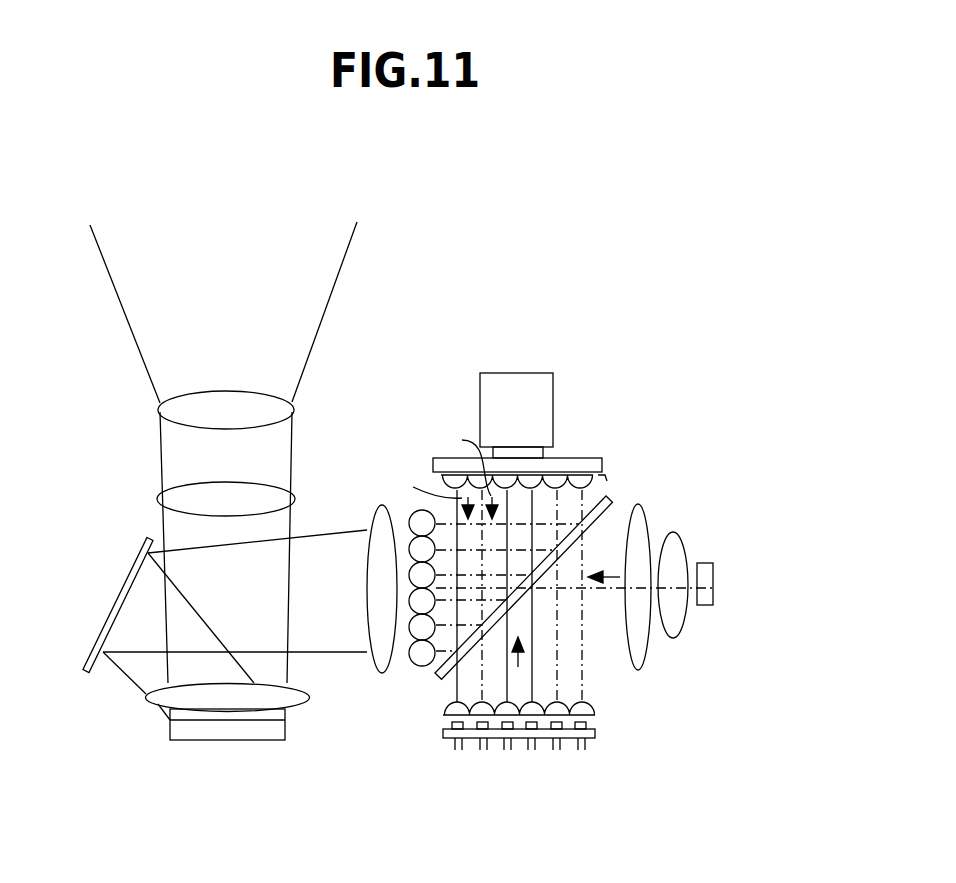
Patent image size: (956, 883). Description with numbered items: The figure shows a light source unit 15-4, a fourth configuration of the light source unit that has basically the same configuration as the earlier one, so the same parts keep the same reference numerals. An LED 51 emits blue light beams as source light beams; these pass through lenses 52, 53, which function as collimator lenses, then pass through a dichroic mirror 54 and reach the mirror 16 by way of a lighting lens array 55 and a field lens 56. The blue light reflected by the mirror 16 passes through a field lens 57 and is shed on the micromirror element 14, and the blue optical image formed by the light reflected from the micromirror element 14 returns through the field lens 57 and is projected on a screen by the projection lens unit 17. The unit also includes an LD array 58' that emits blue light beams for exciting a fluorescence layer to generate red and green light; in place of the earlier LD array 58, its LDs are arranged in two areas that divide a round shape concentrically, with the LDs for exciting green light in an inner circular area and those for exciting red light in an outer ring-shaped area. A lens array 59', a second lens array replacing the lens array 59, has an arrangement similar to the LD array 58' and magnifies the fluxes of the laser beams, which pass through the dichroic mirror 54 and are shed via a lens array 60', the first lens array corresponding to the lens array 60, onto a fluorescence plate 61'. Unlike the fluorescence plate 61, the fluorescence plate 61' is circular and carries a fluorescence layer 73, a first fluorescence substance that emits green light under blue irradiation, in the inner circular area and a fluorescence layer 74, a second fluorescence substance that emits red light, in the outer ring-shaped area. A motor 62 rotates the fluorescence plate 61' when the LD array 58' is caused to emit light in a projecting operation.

The micromirror element 14 is at (233, 742).
The mirror 16 is at (118, 594).
The projection lens unit 17 is at (142, 393).
The light source unit 15-4 is at (555, 530).
The LED 51 is at (707, 563).
The lens 52 is at (675, 533).
The lens 53 is at (642, 503).
The dichroic mirror 54 is at (610, 497).
The lighting lens array 55 is at (425, 670).
The field lens 56 is at (372, 517).
The field lens 57 is at (310, 697).
The LD array 58' is at (519, 764).
The LD array 58 is at (519, 736).
The lens array 59' is at (555, 716).
The lens array 59 is at (519, 708).
The lens array 60' is at (590, 460).
The lens array 60 is at (517, 481).
The fluorescence plate 61' is at (520, 433).
The fluorescence plate 61 is at (517, 459).
The motor 62 is at (515, 373).
The fluorescence layer 73 is at (647, 442).
The fluorescence layer 74 is at (604, 476).